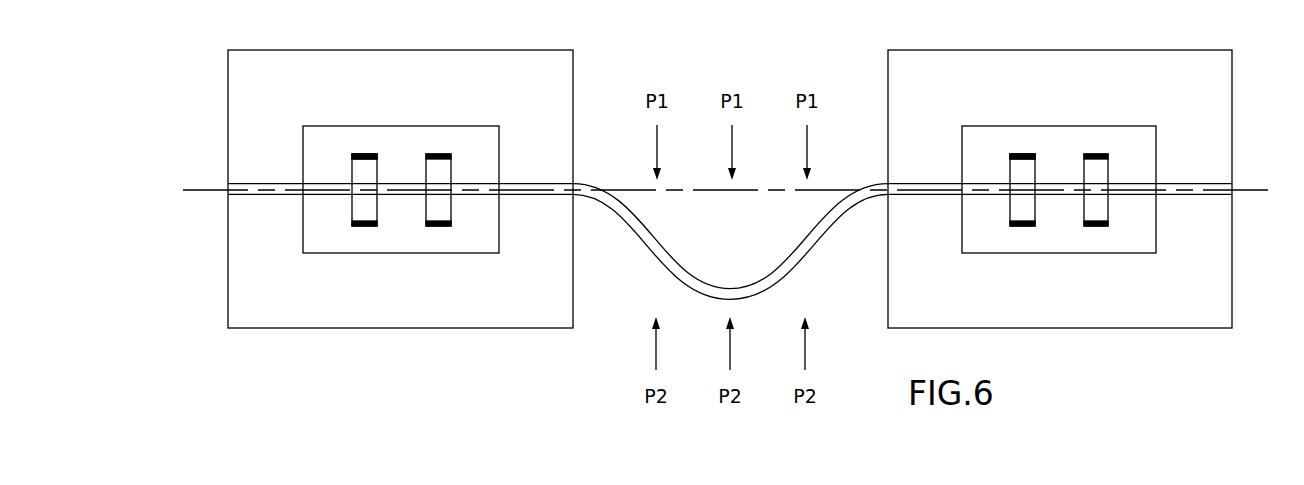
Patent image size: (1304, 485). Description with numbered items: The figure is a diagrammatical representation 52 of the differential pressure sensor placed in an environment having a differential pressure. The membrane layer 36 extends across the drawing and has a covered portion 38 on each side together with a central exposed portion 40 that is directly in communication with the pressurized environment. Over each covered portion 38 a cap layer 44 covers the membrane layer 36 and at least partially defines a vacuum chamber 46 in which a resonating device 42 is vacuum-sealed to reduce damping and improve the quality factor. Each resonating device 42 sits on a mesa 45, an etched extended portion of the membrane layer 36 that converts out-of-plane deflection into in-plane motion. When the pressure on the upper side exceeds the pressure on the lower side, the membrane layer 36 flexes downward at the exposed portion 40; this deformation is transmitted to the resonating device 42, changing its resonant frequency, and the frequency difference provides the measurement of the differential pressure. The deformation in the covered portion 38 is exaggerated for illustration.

The membrane layer 36 is at (680, 274).
The covered portion 38 is at (228, 80).
The exposed portion 40 is at (848, 121).
The resonating device 42 is at (441, 207).
The cap layer 44 is at (402, 126).
The mesa 45 is at (351, 157).
The vacuum chamber 46 is at (474, 133).
The diagrammatical representation 52 is at (224, 371).